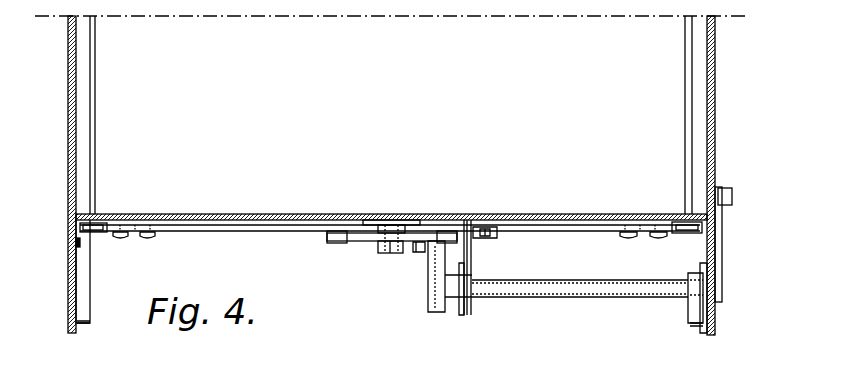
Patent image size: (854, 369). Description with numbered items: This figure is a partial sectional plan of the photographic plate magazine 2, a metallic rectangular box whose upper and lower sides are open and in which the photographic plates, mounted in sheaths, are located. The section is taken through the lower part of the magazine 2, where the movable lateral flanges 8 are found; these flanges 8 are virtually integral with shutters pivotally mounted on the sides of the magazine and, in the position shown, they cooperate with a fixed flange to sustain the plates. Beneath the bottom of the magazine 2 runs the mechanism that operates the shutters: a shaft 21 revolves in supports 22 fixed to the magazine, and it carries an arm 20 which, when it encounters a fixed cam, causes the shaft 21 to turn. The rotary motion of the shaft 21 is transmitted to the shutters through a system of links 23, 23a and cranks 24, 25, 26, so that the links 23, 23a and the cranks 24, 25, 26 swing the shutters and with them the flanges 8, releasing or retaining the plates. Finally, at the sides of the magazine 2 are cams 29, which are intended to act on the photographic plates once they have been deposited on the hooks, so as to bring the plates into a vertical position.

The magazine 2 is at (68, 143).
The movable lateral flanges 8 is at (86, 118).
The arm 20 is at (719, 226).
The shaft 21 is at (616, 290).
The supports 22 is at (466, 307).
The link 23 is at (421, 255).
The links 23a is at (565, 229).
The crank 24 is at (433, 272).
The crank 25 is at (362, 237).
The cranks 26 is at (101, 230).
The cams 29 is at (86, 325).